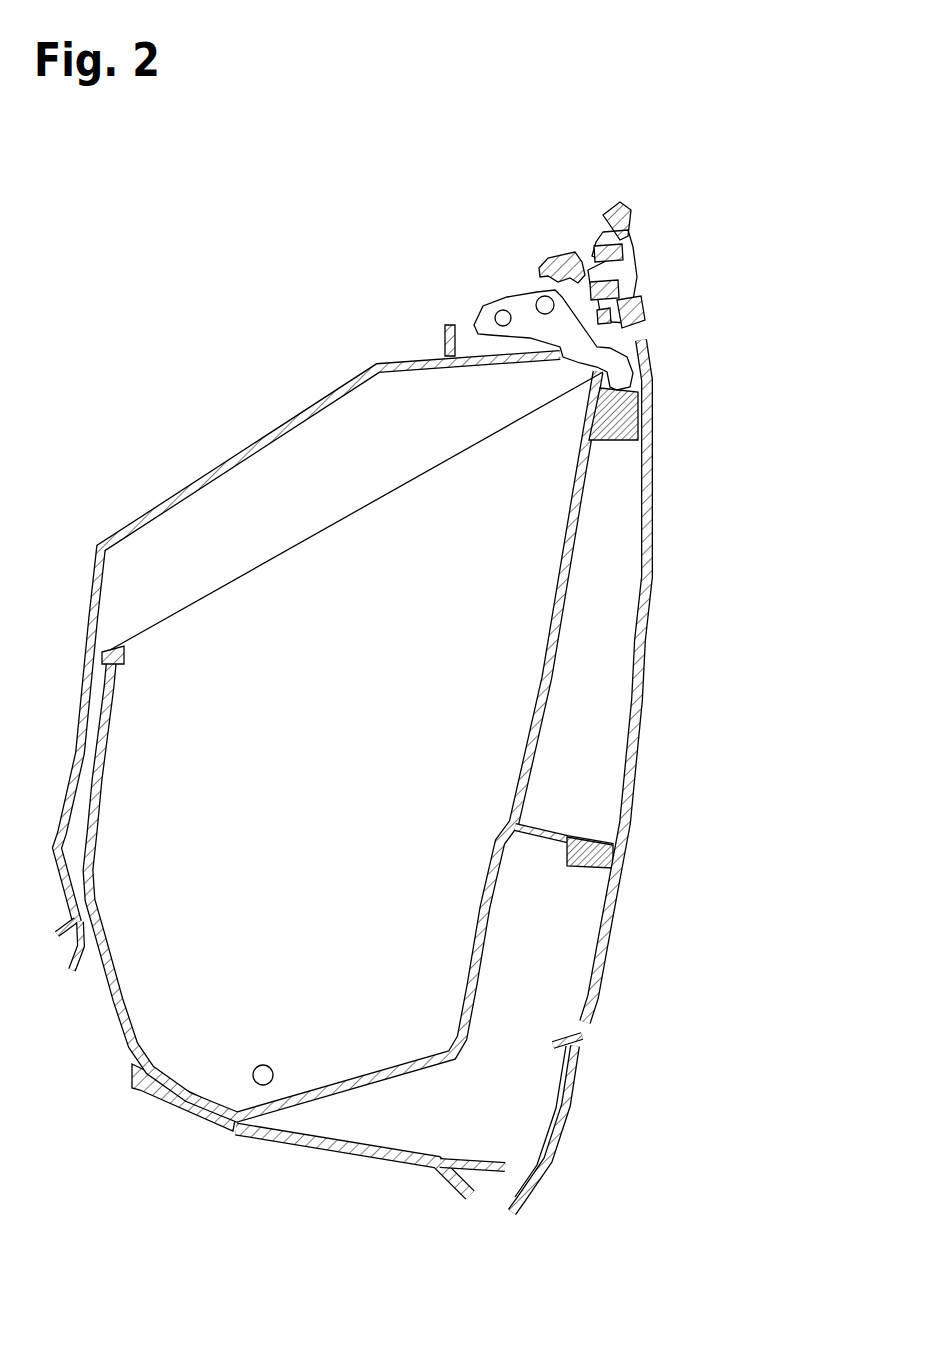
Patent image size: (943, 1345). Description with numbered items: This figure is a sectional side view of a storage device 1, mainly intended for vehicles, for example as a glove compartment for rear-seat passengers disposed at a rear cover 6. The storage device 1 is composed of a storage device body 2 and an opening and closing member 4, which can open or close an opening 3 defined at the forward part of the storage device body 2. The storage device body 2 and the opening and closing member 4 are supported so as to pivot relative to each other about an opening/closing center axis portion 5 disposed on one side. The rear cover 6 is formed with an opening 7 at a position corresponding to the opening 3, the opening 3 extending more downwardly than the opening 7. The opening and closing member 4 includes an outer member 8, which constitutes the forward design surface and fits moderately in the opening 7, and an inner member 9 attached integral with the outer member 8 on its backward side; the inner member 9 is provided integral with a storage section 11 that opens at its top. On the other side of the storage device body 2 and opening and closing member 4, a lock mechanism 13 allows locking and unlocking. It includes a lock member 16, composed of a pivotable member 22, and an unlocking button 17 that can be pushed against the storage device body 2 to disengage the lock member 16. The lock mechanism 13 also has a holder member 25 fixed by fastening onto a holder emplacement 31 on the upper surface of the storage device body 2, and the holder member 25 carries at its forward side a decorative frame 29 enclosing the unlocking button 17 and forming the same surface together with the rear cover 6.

The storage device 1 is at (410, 210).
The storage device body 2 is at (258, 437).
The opening 3 is at (514, 1137).
The opening and closing member 4 is at (787, 540).
The opening/closing center axis portion 5 is at (254, 1083).
The rear cover 6 is at (570, 1110).
The opening 7 is at (578, 1034).
The outer member 8 is at (653, 578).
The inner member 9 is at (558, 647).
The storage section 11 is at (200, 597).
The lock mechanism 13 is at (640, 208).
The lock member 16 is at (502, 280).
The pivotable member 22 is at (553, 340).
The unlocking button 17 is at (658, 276).
The holder member 25 is at (551, 257).
The decorative frame 29 is at (628, 218).
The holder emplacement 31 is at (447, 333).